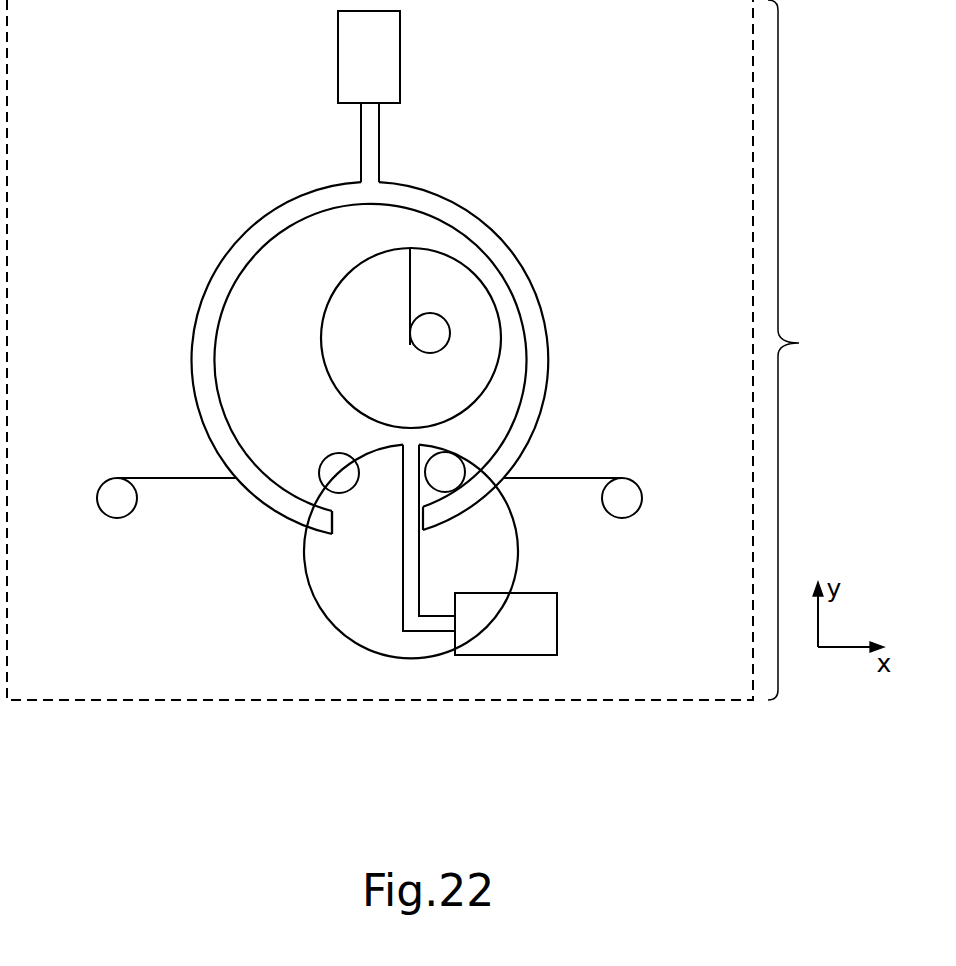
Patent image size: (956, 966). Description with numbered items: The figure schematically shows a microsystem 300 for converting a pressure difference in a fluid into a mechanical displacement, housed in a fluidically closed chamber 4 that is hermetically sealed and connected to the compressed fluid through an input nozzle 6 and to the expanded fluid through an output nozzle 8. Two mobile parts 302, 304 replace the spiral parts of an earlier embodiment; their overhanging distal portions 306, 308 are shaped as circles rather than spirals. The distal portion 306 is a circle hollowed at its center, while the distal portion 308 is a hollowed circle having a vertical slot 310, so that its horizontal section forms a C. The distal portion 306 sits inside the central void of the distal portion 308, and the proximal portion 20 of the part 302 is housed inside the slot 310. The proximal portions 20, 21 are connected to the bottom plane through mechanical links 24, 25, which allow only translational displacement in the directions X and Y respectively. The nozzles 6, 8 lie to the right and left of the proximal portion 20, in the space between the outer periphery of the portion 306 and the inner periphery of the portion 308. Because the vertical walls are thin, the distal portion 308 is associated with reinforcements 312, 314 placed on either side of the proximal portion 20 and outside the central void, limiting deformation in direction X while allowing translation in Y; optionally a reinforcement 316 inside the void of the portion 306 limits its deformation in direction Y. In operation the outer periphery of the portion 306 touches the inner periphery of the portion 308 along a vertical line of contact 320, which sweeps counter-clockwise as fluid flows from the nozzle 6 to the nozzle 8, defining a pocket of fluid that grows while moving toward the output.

The fluidically closed chamber 4 is at (90, 702).
The microsystem 300 is at (809, 350).
The mechanical link 25 is at (369, 57).
The proximal portion 21 is at (367, 150).
The mobile part 304 is at (428, 197).
The distal portion 308 is at (347, 334).
The vertical slot 310 is at (332, 534).
The mobile part 302 is at (360, 438).
The vertical line of contact 320 is at (510, 292).
The distal portion 306 is at (311, 337).
The reinforcement 316 is at (400, 297).
The output nozzle 8 is at (337, 455).
The input nozzle 6 is at (462, 474).
The proximal portion 20 is at (410, 580).
The mechanical link 24 is at (506, 624).
The reinforcement 312 is at (160, 490).
The reinforcement 314 is at (598, 490).